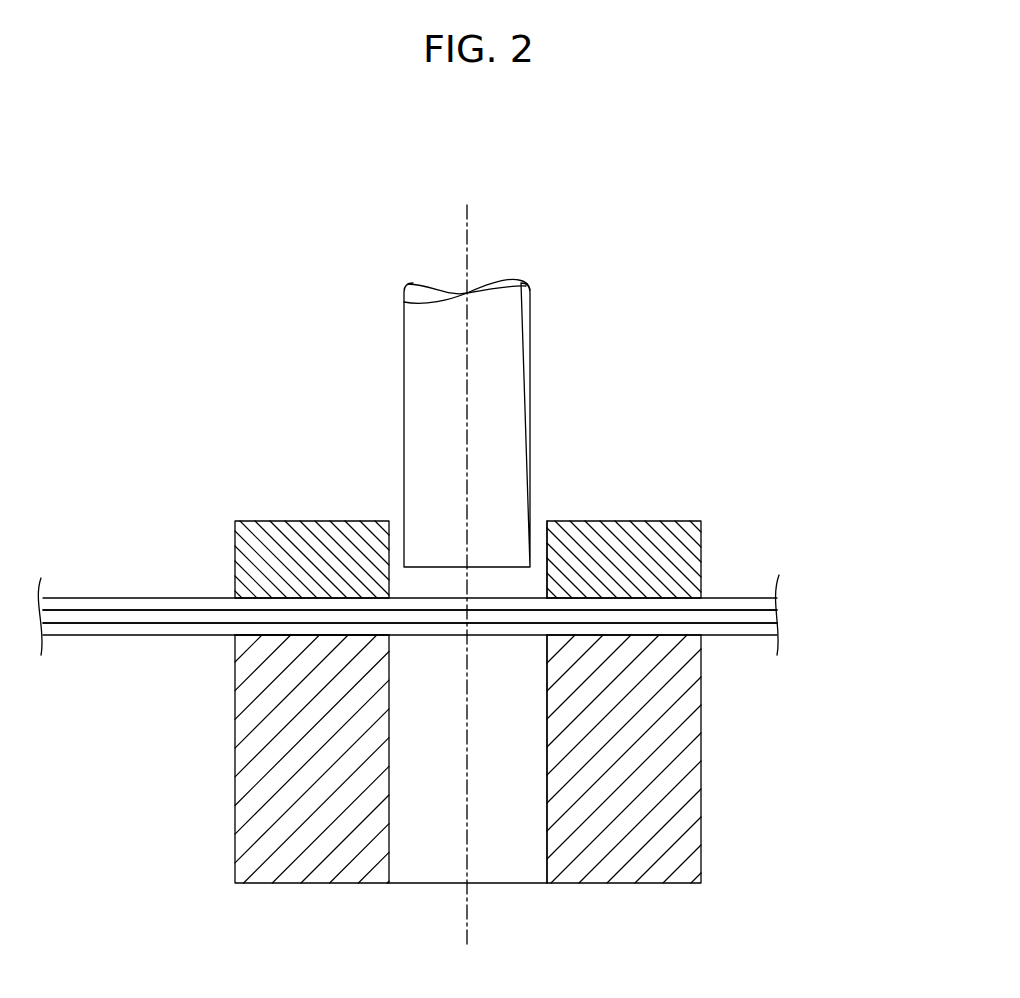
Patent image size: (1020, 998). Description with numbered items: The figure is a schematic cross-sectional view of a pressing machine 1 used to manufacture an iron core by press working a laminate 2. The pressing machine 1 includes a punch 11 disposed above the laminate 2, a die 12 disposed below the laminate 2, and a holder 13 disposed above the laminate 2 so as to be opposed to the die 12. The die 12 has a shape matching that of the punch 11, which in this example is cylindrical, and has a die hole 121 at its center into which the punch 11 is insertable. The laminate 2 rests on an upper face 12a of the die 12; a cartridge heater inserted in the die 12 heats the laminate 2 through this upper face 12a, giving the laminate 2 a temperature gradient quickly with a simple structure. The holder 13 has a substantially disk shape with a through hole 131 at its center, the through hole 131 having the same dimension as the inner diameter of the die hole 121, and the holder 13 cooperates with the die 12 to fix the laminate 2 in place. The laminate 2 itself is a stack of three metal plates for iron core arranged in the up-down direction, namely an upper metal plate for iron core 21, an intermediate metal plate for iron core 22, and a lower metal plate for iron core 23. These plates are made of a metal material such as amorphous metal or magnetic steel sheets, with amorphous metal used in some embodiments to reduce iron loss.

The pressing machine 1 is at (733, 366).
The punch 11 is at (415, 364).
The die 12 is at (689, 763).
The upper face of the die 12a is at (289, 633).
The die hole 121 is at (547, 822).
The holder 13 is at (689, 553).
The through hole 131 is at (540, 545).
The laminate 2 is at (853, 575).
The upper metal plate for iron core 21 is at (777, 603).
The intermediate metal plate for iron core 22 is at (777, 617).
The lower metal plate for iron core 23 is at (777, 630).